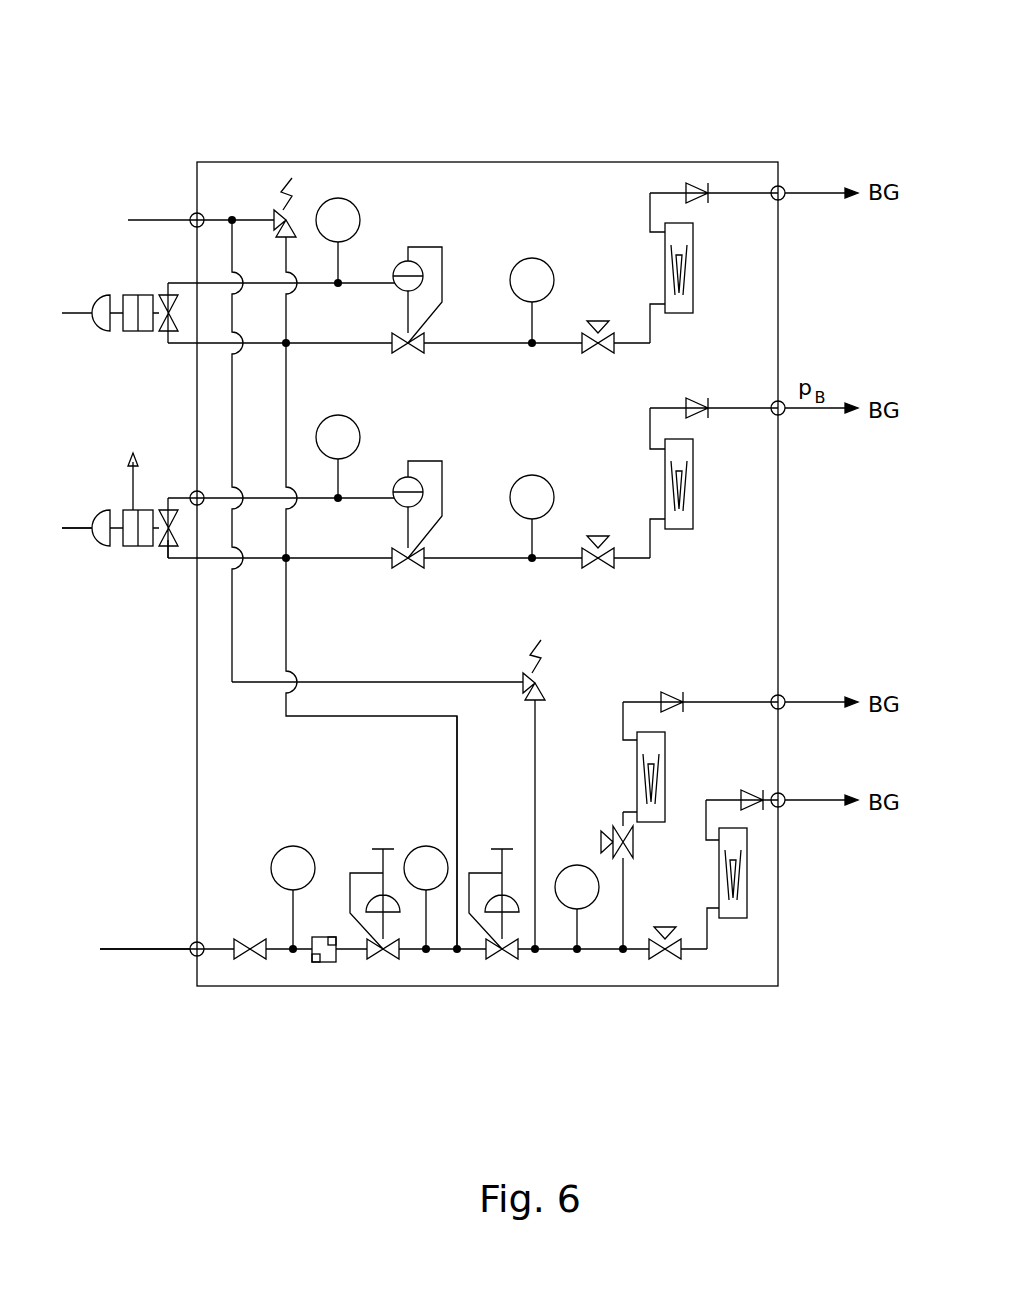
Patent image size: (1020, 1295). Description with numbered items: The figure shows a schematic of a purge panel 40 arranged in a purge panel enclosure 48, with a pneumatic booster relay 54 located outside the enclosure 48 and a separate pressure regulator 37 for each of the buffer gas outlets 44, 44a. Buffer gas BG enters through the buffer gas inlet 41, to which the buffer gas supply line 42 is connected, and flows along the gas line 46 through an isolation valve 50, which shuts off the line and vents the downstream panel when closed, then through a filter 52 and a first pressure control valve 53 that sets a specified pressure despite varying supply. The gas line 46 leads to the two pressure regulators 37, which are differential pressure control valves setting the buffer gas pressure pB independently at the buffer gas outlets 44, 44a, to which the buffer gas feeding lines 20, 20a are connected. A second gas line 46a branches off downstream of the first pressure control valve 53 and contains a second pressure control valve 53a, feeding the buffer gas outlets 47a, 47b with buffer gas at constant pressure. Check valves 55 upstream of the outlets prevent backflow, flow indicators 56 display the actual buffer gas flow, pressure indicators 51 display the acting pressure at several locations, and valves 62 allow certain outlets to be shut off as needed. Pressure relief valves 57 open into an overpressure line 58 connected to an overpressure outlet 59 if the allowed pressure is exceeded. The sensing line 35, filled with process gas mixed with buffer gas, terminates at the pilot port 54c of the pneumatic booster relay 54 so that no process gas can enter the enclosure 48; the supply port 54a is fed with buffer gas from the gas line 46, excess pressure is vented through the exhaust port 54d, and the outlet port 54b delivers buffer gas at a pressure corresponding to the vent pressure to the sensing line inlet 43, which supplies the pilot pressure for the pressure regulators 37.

The buffer gas feeding line 20 is at (820, 412).
The buffer gas feeding line 20a is at (820, 200).
The sensing line 35 is at (82, 532).
The pressure regulator 37 is at (408, 343).
The purge panel 40 is at (477, 128).
The buffer gas inlet 41 is at (192, 955).
The buffer gas supply line 42 is at (137, 945).
The sensing line inlet 43 is at (195, 491).
The buffer gas outlet 44 is at (784, 412).
The buffer gas outlet 44a is at (785, 188).
The gas line 46 is at (343, 717).
The second gas line 46a is at (470, 955).
The buffer gas outlet 47a is at (783, 805).
The buffer gas outlet 47b is at (783, 700).
The purge panel enclosure 48 is at (534, 160).
The isolation valve 50 is at (247, 963).
The pressure indicator 51 is at (350, 200).
The filter 52 is at (320, 965).
The first pressure control valve 53 is at (385, 962).
The second pressure control valve 53a is at (496, 962).
The pneumatic booster relay 54 is at (109, 474).
The supply port 54a is at (167, 548).
The outlet port 54b is at (166, 508).
The pilot port 54c is at (98, 517).
The exhaust port 54d is at (134, 508).
The check valve 55 is at (702, 188).
The flow indicator 56 is at (693, 312).
The pressure relief valve 57 is at (292, 212).
The overpressure line 58 is at (420, 682).
The overpressure outlet 59 is at (190, 214).
The valve 62 is at (600, 353).